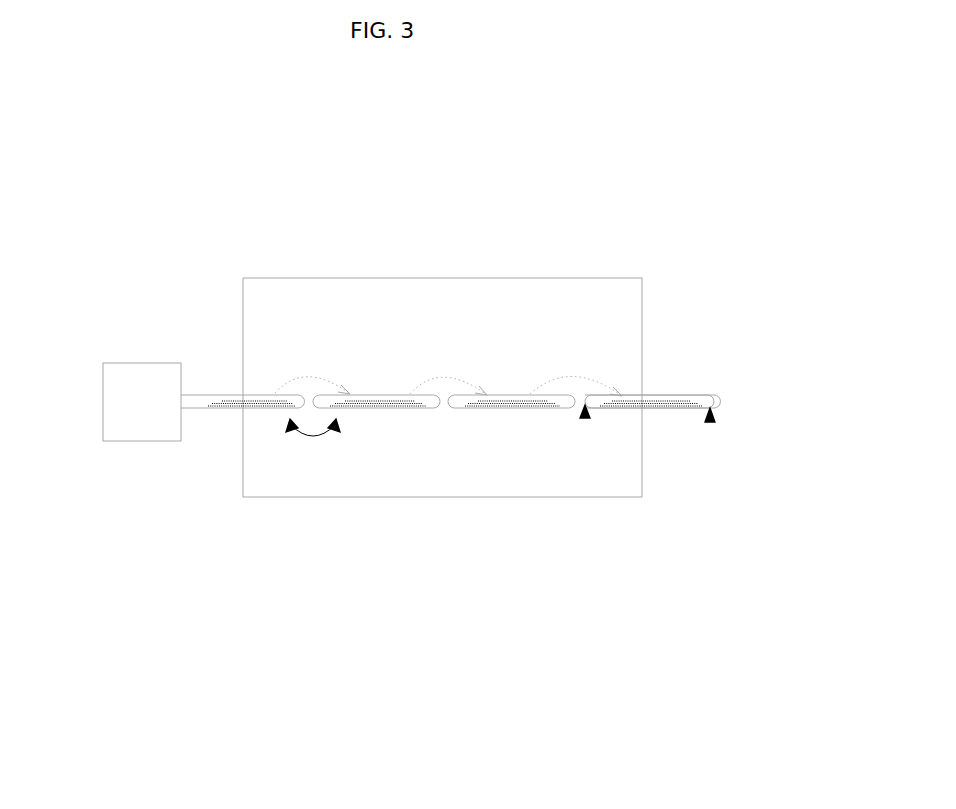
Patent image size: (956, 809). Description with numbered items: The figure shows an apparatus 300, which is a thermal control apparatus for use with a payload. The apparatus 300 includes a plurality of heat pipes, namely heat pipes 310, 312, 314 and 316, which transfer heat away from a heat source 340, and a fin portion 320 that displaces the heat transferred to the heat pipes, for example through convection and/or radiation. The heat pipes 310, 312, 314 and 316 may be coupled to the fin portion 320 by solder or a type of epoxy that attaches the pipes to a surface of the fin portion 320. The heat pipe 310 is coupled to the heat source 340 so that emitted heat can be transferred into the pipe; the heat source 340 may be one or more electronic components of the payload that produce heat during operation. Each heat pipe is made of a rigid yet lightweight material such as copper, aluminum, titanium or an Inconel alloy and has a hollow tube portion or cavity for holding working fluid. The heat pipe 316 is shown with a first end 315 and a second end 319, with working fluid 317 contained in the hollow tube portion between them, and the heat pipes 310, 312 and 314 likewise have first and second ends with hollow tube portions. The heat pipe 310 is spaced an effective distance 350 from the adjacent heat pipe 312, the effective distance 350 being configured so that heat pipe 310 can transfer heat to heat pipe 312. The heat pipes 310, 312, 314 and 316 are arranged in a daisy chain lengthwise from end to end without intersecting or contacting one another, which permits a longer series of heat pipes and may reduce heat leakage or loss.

The apparatus 300 is at (782, 31).
The heat pipe 310 is at (237, 410).
The heat pipe 312 is at (378, 410).
The heat pipe 314 is at (512, 410).
The first end 315 is at (583, 418).
The heat pipe 316 is at (606, 410).
The working fluid 317 is at (650, 410).
The second end 319 is at (710, 422).
The fin portion 320 is at (346, 278).
The heat source 340 is at (135, 441).
The effective distance 350 is at (320, 438).